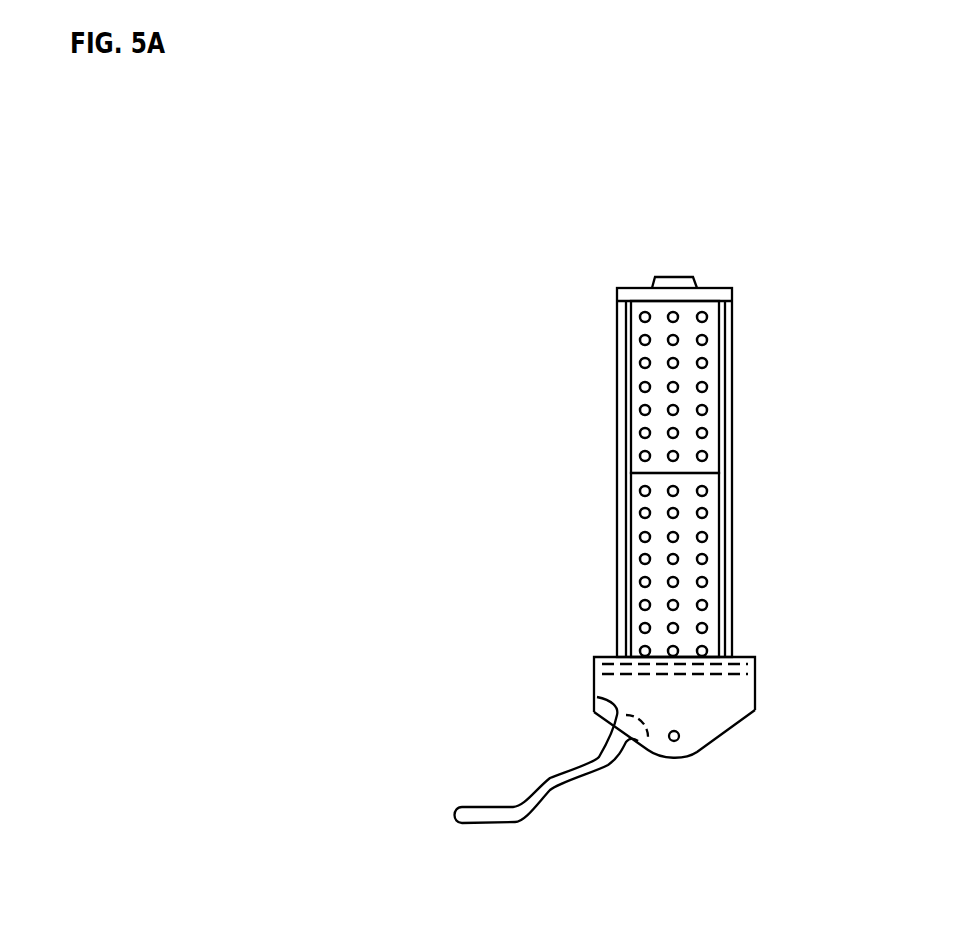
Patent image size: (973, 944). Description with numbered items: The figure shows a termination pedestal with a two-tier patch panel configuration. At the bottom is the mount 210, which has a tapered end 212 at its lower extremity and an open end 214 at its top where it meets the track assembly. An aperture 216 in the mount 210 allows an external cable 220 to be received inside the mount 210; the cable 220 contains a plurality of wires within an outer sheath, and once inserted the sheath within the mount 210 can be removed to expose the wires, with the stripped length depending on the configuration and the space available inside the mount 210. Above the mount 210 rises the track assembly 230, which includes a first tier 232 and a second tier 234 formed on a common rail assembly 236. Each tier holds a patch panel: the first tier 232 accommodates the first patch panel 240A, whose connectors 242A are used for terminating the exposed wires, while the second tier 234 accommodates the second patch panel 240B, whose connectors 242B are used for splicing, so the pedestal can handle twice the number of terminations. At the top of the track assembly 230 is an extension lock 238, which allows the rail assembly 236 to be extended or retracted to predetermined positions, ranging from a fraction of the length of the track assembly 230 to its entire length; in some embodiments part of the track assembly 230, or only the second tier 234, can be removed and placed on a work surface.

The mount 210 is at (755, 700).
The tapered end 212 is at (729, 738).
The open end 214 is at (740, 645).
The aperture 216 is at (598, 697).
The cable 220 is at (567, 787).
The track assembly 230 is at (775, 386).
The first tier 232 is at (602, 473).
The second tier 234 is at (602, 305).
The rail assembly 236 is at (616, 304).
The extension lock 238 is at (673, 276).
The first patch panel 240A is at (708, 595).
The second patch panel 240B is at (708, 423).
The connectors 242A is at (708, 491).
The connectors 242B is at (708, 317).